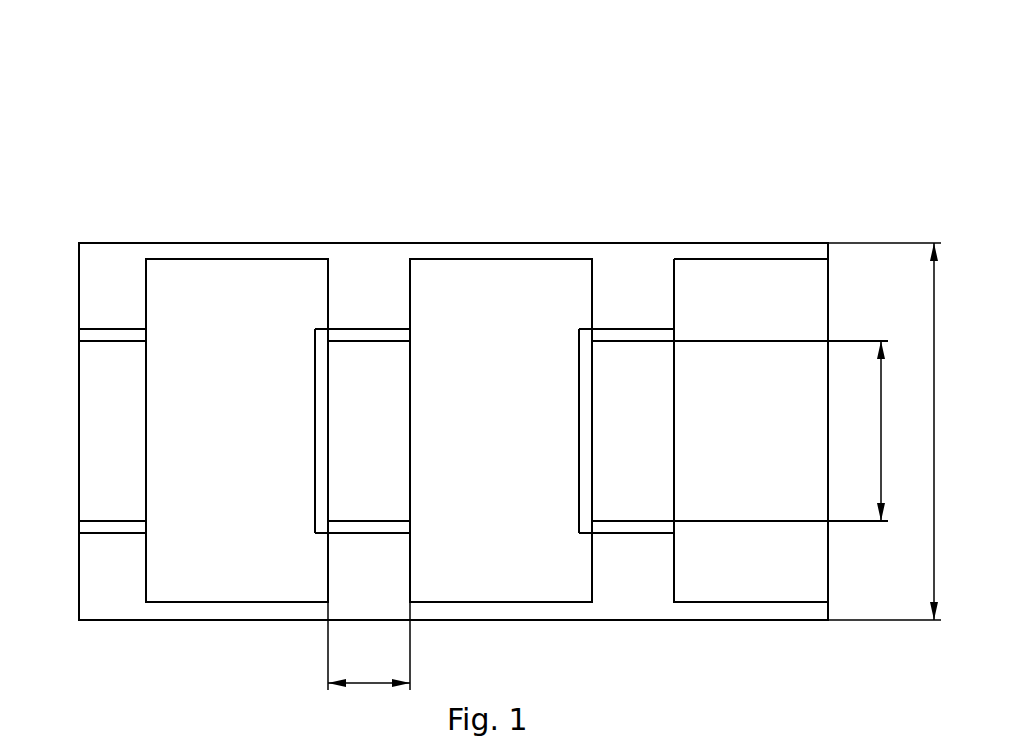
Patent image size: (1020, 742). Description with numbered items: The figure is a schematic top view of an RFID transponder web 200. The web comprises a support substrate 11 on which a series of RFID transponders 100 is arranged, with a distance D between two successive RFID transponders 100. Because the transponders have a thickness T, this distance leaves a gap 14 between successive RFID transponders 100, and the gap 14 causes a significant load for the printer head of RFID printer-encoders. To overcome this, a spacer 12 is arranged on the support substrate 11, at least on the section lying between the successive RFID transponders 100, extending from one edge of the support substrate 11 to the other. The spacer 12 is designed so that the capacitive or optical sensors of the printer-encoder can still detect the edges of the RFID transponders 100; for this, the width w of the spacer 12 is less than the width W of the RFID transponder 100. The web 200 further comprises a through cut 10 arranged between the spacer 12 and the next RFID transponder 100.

The support substrate 11 is at (266, 100).
The RFID transponder web 200 is at (210, 206).
The RFID transponder 100 is at (254, 286).
The through cut 10 is at (390, 330).
The spacer 12 is at (90, 377).
The gap 14 is at (357, 586).